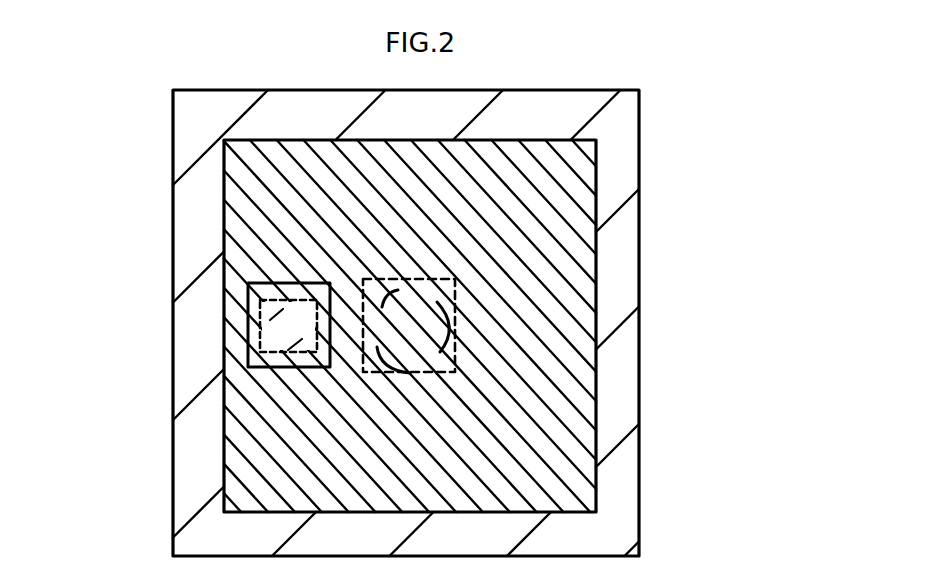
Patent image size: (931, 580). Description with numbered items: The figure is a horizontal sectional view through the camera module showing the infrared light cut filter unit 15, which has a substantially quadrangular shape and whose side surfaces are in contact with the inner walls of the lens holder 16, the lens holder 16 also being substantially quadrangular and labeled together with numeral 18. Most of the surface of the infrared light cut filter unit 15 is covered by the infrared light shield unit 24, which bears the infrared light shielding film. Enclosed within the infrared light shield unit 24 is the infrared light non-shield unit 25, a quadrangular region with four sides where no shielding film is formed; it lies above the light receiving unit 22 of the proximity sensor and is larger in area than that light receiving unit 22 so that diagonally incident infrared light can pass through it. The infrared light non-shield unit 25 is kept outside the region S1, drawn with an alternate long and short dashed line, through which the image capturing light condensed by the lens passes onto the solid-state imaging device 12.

The solid-state imaging device 12 is at (455, 299).
The infrared light cut filter unit 15 is at (337, 326).
The lens holder 16 is at (470, 323).
The frame body 18 is at (622, 163).
The light receiving unit 22 is at (250, 303).
The infrared light shield unit 24 is at (307, 434).
The infrared light non-shield unit 25 is at (302, 357).
The region indicated by alternate long and short dashed line S1 is at (455, 353).